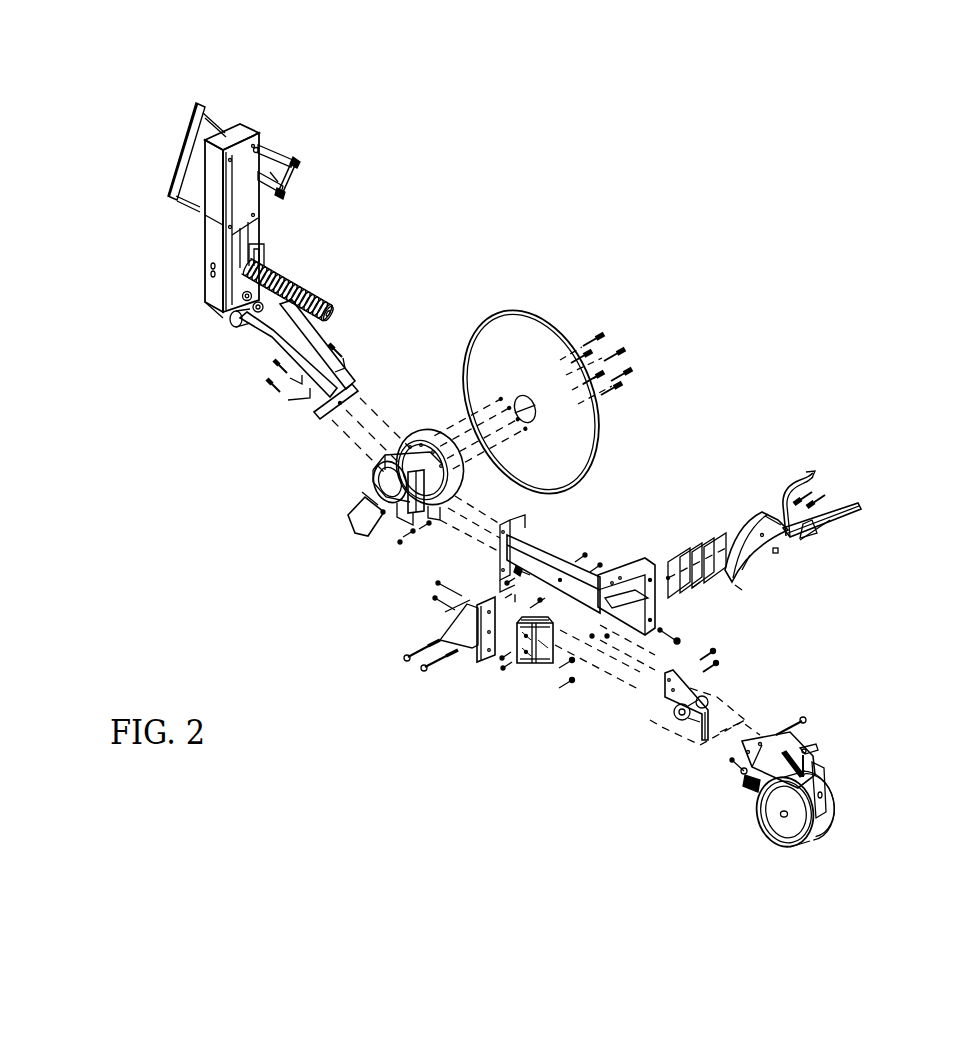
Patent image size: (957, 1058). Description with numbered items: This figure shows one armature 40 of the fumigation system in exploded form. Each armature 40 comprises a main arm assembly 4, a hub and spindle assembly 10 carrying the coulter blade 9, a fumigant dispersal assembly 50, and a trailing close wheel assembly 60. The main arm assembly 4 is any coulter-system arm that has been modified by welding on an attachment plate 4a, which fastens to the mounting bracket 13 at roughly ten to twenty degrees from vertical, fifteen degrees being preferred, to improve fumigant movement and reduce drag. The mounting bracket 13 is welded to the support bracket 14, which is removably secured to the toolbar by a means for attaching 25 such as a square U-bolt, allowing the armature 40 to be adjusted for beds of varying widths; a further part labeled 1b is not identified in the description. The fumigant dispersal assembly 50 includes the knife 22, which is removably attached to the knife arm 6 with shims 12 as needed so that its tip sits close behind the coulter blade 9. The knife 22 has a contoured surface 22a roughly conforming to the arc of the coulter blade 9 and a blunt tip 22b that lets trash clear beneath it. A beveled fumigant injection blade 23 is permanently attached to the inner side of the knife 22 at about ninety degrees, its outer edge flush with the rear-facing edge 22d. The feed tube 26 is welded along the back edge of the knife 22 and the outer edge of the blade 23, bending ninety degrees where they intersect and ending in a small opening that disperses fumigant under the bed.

The handle bar 1b is at (197, 103).
The main arm assembly 4 is at (243, 128).
The attachment plate 4a is at (212, 232).
The means for attaching 25 is at (272, 152).
The support bracket 14 is at (290, 176).
The mounting bracket 13 is at (282, 198).
The coulter blade 9 is at (500, 345).
The hub and spindle assembly 10 is at (423, 433).
The knife arm 6 is at (652, 625).
The blunt tip 22b is at (710, 530).
The shims 12 is at (708, 585).
The knife 22 is at (757, 565).
The contoured surface 22a is at (737, 558).
The rear-facing edge 22d is at (740, 580).
The feed tube 26 is at (790, 532).
The fumigant injection blade 23 is at (842, 522).
The fumigant dispersal assembly 50 is at (862, 486).
The armature 40 is at (529, 670).
The close wheel assembly 60 is at (832, 746).